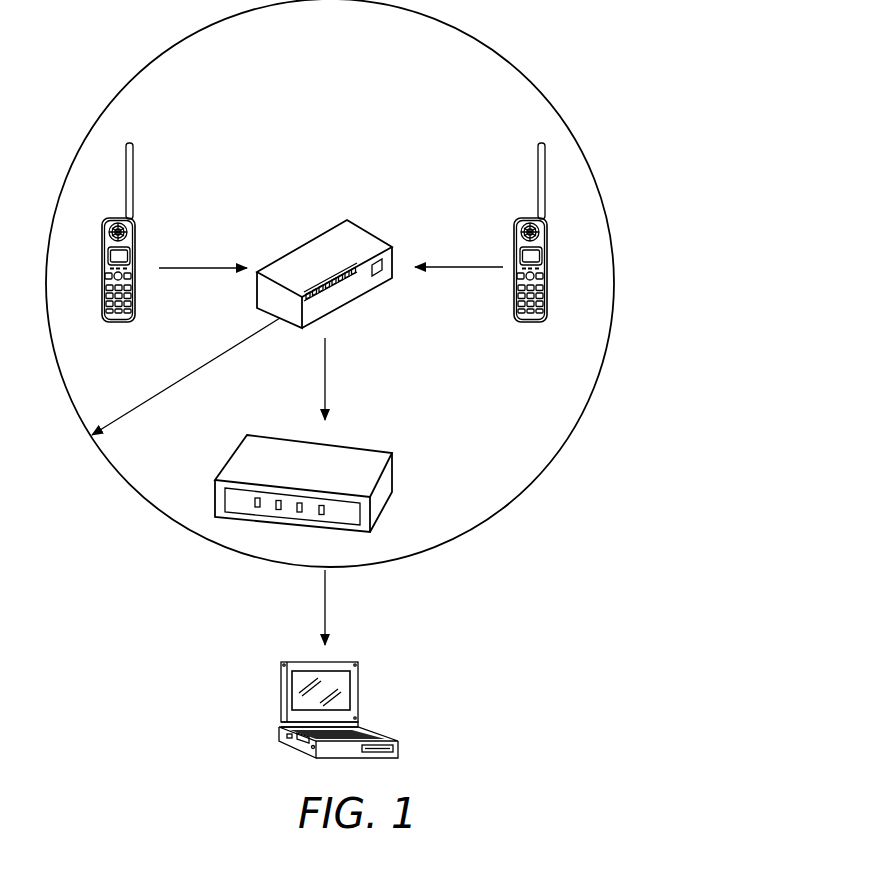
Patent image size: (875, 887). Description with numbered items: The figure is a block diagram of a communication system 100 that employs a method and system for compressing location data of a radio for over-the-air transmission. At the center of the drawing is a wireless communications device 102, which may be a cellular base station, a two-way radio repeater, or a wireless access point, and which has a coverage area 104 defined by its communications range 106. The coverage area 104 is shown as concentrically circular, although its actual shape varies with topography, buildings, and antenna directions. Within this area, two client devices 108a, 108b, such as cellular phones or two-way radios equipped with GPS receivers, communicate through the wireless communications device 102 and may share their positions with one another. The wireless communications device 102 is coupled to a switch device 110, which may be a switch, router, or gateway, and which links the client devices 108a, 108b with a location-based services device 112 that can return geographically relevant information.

The communication system 100 is at (832, 67).
The wireless communications device 102 is at (301, 245).
The coverage area 104 is at (615, 283).
The communications range 106 is at (222, 351).
The client device 108a is at (133, 180).
The client device 108b is at (537, 180).
The switch device 110 is at (366, 447).
The location-based services device 112 is at (281, 693).